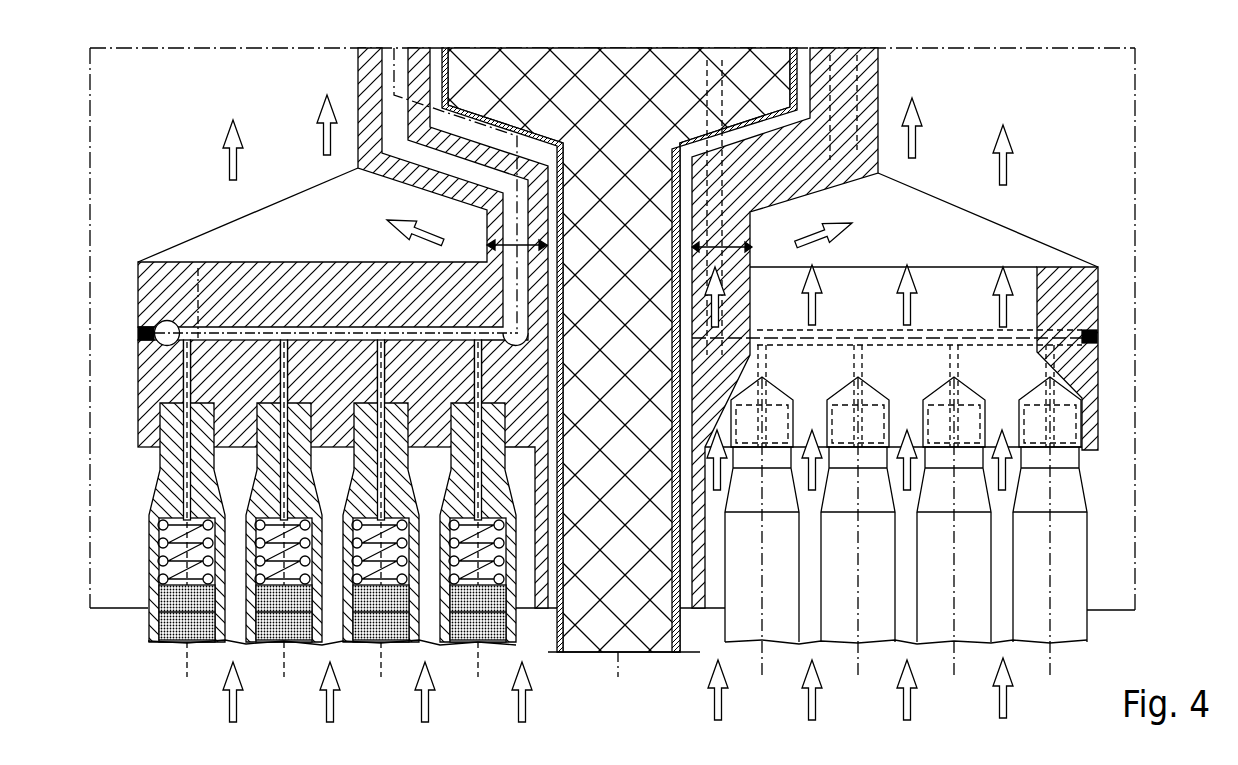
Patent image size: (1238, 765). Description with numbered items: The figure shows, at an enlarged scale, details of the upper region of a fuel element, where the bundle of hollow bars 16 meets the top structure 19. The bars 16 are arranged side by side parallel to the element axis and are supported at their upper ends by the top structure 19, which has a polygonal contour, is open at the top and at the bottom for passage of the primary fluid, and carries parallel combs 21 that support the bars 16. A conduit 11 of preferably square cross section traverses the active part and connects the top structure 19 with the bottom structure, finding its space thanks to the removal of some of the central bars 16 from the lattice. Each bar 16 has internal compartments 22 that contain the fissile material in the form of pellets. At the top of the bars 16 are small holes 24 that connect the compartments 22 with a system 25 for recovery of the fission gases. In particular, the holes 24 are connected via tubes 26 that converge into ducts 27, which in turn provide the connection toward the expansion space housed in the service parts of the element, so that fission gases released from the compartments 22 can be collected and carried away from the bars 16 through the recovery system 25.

The conduit 11 is at (700, 587).
The bars 16 is at (148, 615).
The top structure 19 is at (1072, 310).
The combs 21 is at (158, 367).
The internal compartments 22 is at (180, 577).
The small holes 24 is at (185, 473).
The system for recovery of the fission gases 25 is at (384, 37).
The tubes 26 is at (233, 332).
The ducts 27 is at (394, 97).